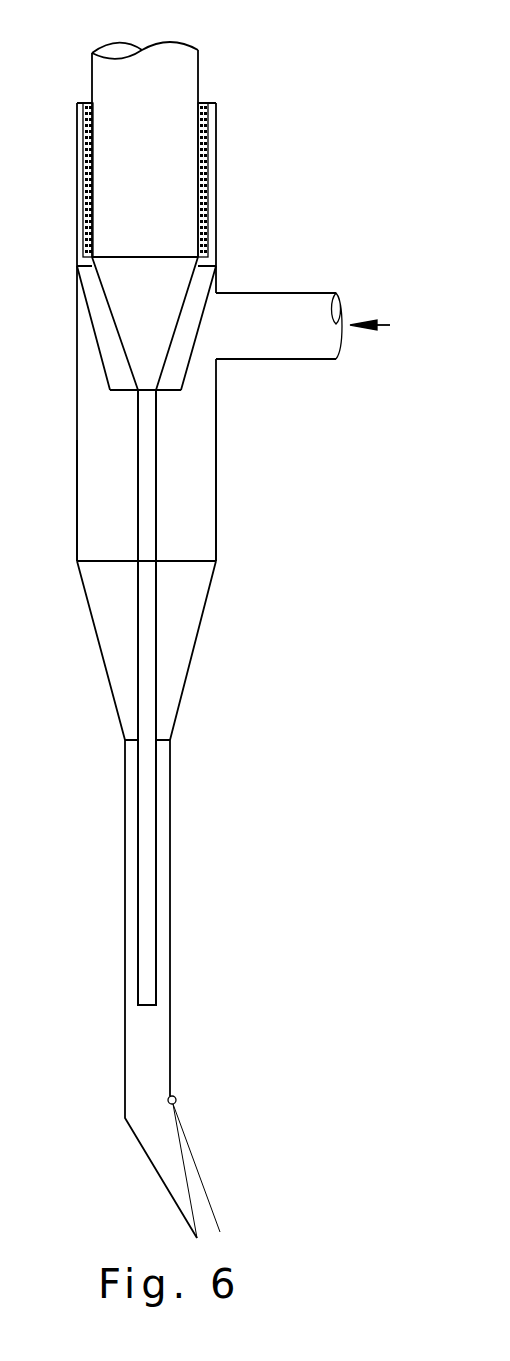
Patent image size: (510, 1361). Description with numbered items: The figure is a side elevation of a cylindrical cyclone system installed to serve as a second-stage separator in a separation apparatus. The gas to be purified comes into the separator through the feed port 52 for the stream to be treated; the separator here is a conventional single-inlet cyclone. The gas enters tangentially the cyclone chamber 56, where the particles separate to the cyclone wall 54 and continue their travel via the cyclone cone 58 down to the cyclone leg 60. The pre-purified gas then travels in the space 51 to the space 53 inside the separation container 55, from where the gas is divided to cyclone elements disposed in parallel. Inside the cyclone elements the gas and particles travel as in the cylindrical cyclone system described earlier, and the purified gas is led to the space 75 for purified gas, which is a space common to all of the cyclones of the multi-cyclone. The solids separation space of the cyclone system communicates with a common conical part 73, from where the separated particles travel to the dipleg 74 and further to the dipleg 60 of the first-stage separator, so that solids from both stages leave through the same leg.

The space 51 is at (100, 323).
The feed port 52 is at (283, 312).
The space inside the separation container 53 is at (214, 139).
The cyclone wall 54 is at (219, 433).
The separation container 55 is at (214, 200).
The cyclone chamber 56 is at (187, 483).
The cyclone cone 58 is at (188, 676).
The cyclone leg 60 is at (160, 1030).
The common conical part 73 is at (187, 270).
The dipleg 74 is at (150, 590).
The space for purified gas 75 is at (174, 58).